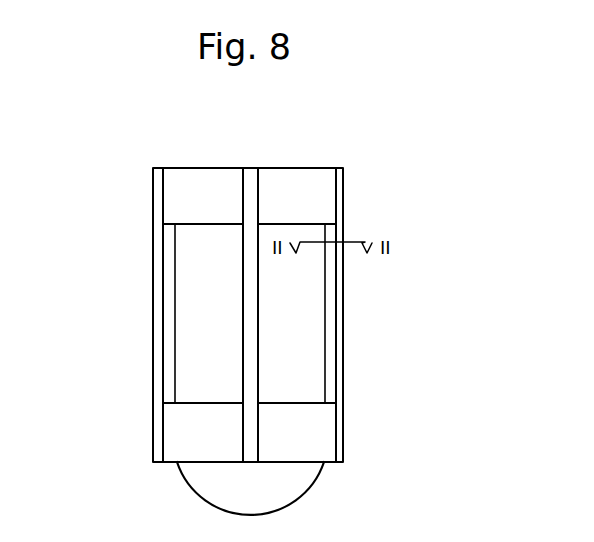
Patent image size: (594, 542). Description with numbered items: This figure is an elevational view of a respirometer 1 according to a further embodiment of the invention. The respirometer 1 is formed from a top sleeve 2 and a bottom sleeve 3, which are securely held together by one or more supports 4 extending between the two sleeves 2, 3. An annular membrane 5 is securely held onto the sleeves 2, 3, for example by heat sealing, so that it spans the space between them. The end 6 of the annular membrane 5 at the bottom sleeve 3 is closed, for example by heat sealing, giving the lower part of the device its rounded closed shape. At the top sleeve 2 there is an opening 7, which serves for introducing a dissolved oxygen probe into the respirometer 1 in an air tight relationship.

The respirometer 1 is at (397, 125).
The top sleeve 2 is at (335, 198).
The bottom sleeve 3 is at (325, 437).
The support 4 is at (153, 327).
The annular membrane 5 is at (175, 252).
The end of the annular membrane 6 is at (190, 488).
The opening 7 is at (296, 192).